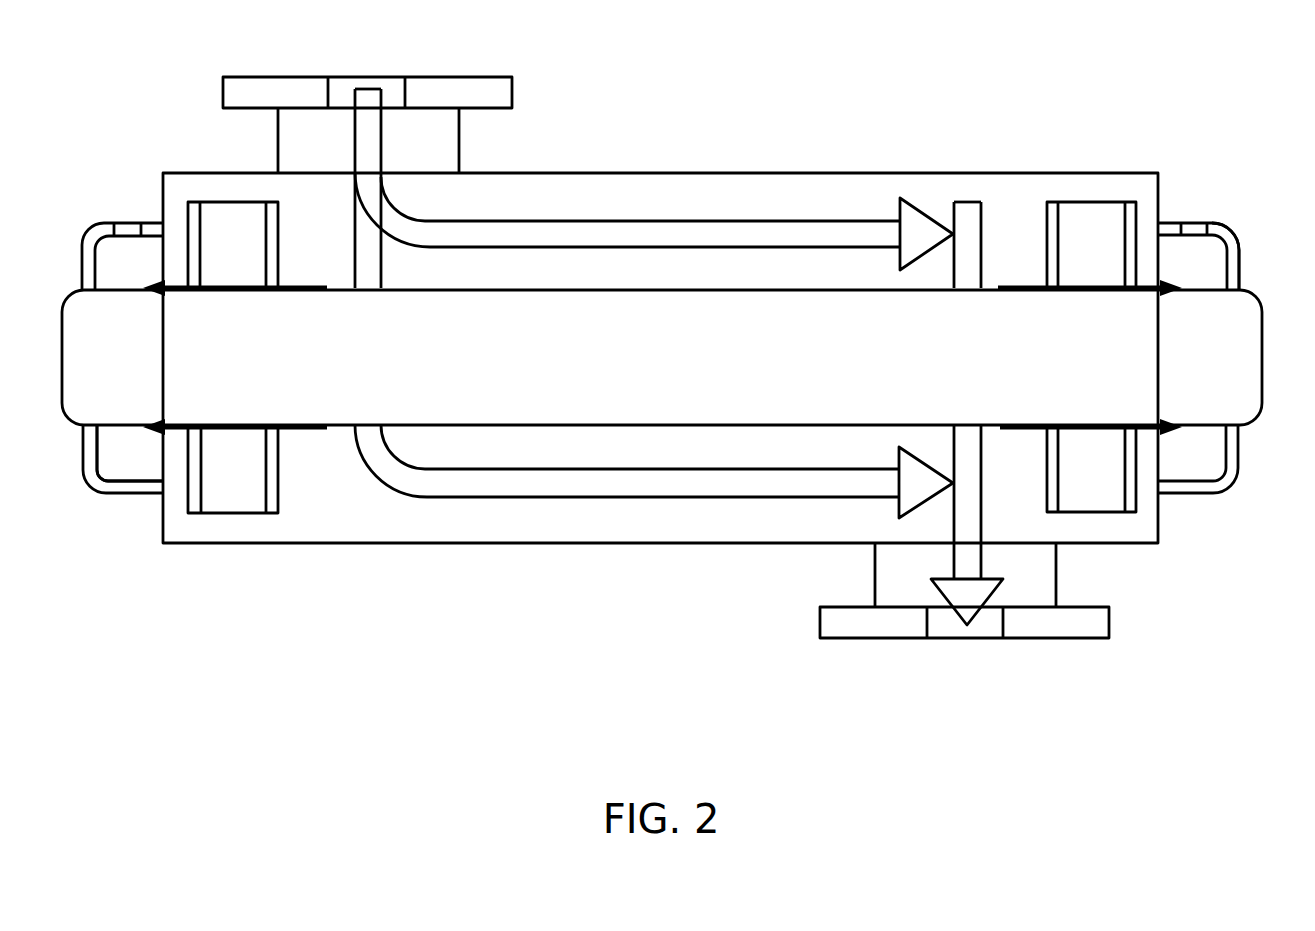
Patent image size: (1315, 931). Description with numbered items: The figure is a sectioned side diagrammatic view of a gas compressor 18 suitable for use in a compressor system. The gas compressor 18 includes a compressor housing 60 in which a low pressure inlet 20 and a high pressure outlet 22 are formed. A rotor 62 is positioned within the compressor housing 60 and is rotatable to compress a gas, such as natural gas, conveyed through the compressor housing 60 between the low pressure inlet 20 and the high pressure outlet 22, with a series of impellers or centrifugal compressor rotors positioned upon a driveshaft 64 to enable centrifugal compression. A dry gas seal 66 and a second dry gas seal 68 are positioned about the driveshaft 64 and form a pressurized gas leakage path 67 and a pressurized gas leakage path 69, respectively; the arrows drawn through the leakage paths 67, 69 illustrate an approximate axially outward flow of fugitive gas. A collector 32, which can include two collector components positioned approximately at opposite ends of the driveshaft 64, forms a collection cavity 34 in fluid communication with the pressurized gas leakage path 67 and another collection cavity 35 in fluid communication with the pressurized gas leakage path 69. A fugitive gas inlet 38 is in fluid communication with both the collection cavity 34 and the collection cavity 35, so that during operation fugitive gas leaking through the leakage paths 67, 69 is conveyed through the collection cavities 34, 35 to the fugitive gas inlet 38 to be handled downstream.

The gas compressor 18 is at (245, 572).
The low pressure inlet 20 is at (329, 89).
The high pressure outlet 22 is at (929, 628).
The collector 32 is at (82, 443).
The collection cavity 34 is at (118, 460).
The collection cavity 35 is at (1209, 260).
The fugitive gas inlet 38 is at (118, 230).
The compressor housing 60 is at (431, 543).
The rotor 62 is at (836, 434).
The driveshaft 64 is at (642, 427).
The dry gas seal 66 is at (296, 204).
The pressurized gas leakage path 67 is at (258, 291).
The second dry gas seal 68 is at (1034, 204).
The pressurized gas leakage path 69 is at (1073, 291).